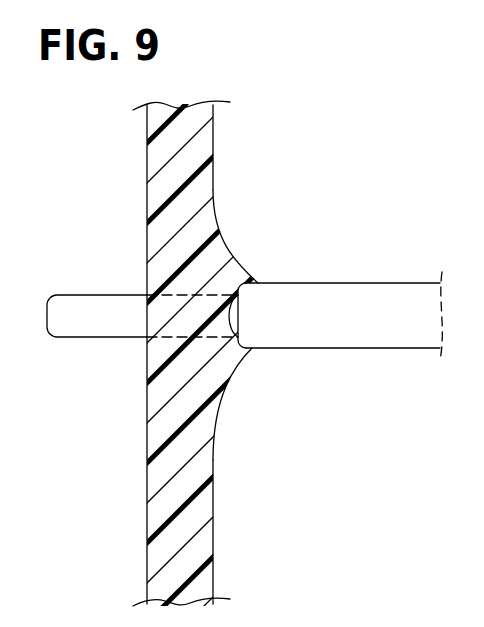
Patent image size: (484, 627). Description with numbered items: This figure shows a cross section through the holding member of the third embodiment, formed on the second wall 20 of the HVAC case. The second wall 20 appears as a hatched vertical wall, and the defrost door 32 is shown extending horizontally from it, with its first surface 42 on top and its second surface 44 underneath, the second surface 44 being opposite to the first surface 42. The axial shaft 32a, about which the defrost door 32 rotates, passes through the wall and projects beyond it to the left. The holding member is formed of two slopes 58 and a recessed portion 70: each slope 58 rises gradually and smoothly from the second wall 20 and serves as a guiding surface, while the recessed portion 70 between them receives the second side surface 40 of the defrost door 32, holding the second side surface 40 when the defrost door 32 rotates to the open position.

The second wall 20 is at (199, 132).
The slope 58 is at (230, 250).
The second side surface 40 is at (215, 313).
The defrost door 32 is at (340, 321).
The first surface 42 is at (305, 283).
The second surface 44 is at (403, 349).
The recessed portion 70 is at (240, 319).
The axial shaft 32a is at (63, 337).